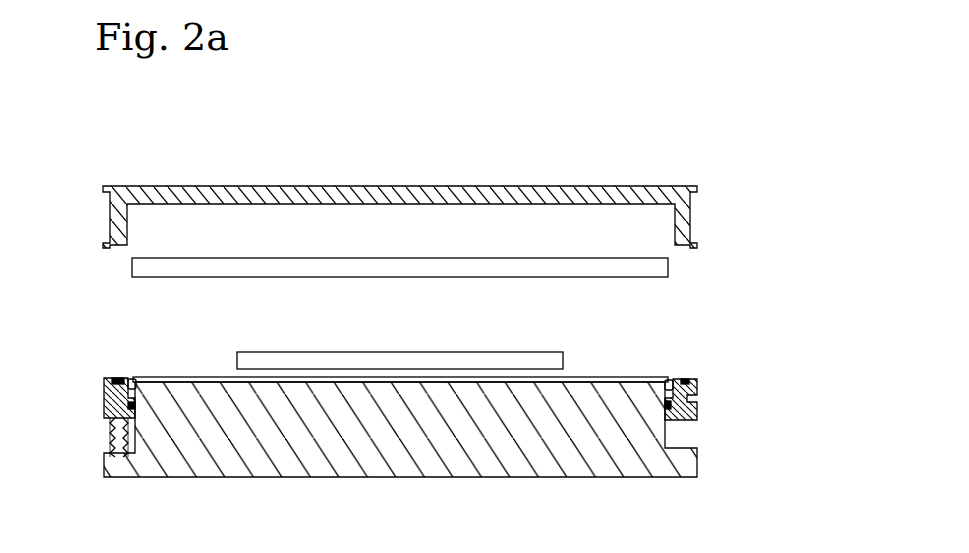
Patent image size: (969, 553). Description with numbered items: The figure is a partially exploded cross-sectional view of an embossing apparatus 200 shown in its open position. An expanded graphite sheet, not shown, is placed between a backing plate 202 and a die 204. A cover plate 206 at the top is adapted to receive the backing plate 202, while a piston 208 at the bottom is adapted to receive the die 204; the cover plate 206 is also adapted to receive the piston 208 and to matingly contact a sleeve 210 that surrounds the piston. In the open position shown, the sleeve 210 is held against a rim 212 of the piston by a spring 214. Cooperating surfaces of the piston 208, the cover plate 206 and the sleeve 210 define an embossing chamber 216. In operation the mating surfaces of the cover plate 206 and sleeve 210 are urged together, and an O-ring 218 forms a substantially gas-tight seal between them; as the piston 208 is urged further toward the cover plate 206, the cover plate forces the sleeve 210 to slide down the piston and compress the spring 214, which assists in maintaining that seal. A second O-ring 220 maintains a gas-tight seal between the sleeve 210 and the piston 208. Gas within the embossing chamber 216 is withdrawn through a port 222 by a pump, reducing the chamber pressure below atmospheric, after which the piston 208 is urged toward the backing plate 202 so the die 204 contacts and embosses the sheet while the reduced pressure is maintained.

The embossing apparatus 200 is at (608, 84).
The backing plate 202 is at (670, 269).
The die 204 is at (512, 351).
The cover plate 206 is at (403, 186).
The piston 208 is at (418, 477).
The sleeve 210 is at (104, 401).
The rim 212 is at (131, 380).
The spring 214 is at (110, 439).
The embossing chamber 216 is at (388, 325).
The O-ring 218 is at (117, 380).
The O-ring 220 is at (131, 407).
The port 222 is at (697, 401).